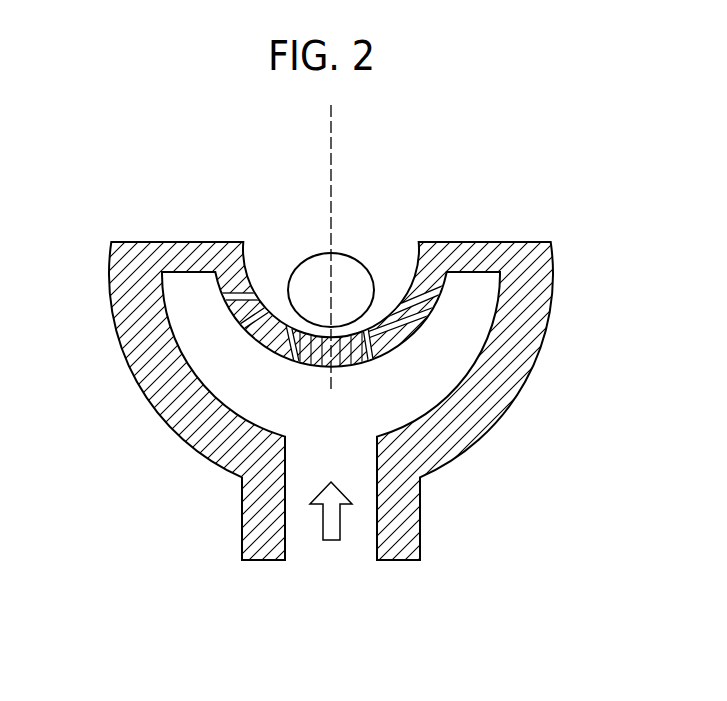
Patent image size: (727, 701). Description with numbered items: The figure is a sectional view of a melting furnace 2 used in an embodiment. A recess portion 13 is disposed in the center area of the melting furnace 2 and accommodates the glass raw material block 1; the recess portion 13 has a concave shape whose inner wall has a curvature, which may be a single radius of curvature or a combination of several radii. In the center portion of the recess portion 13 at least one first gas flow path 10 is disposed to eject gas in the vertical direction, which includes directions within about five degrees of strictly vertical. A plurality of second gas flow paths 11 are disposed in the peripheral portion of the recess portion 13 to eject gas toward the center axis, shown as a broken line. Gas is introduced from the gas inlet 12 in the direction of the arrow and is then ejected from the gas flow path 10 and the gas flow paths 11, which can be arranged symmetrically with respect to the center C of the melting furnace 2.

The glass raw material block 1 is at (317, 272).
The melting furnace 2 is at (122, 262).
The first gas flow path 10 is at (285, 375).
The second gas flow paths 11 is at (215, 286).
The gas inlet 12 is at (331, 557).
The recess portion 13 is at (384, 284).
The center of the melting furnace C is at (367, 352).